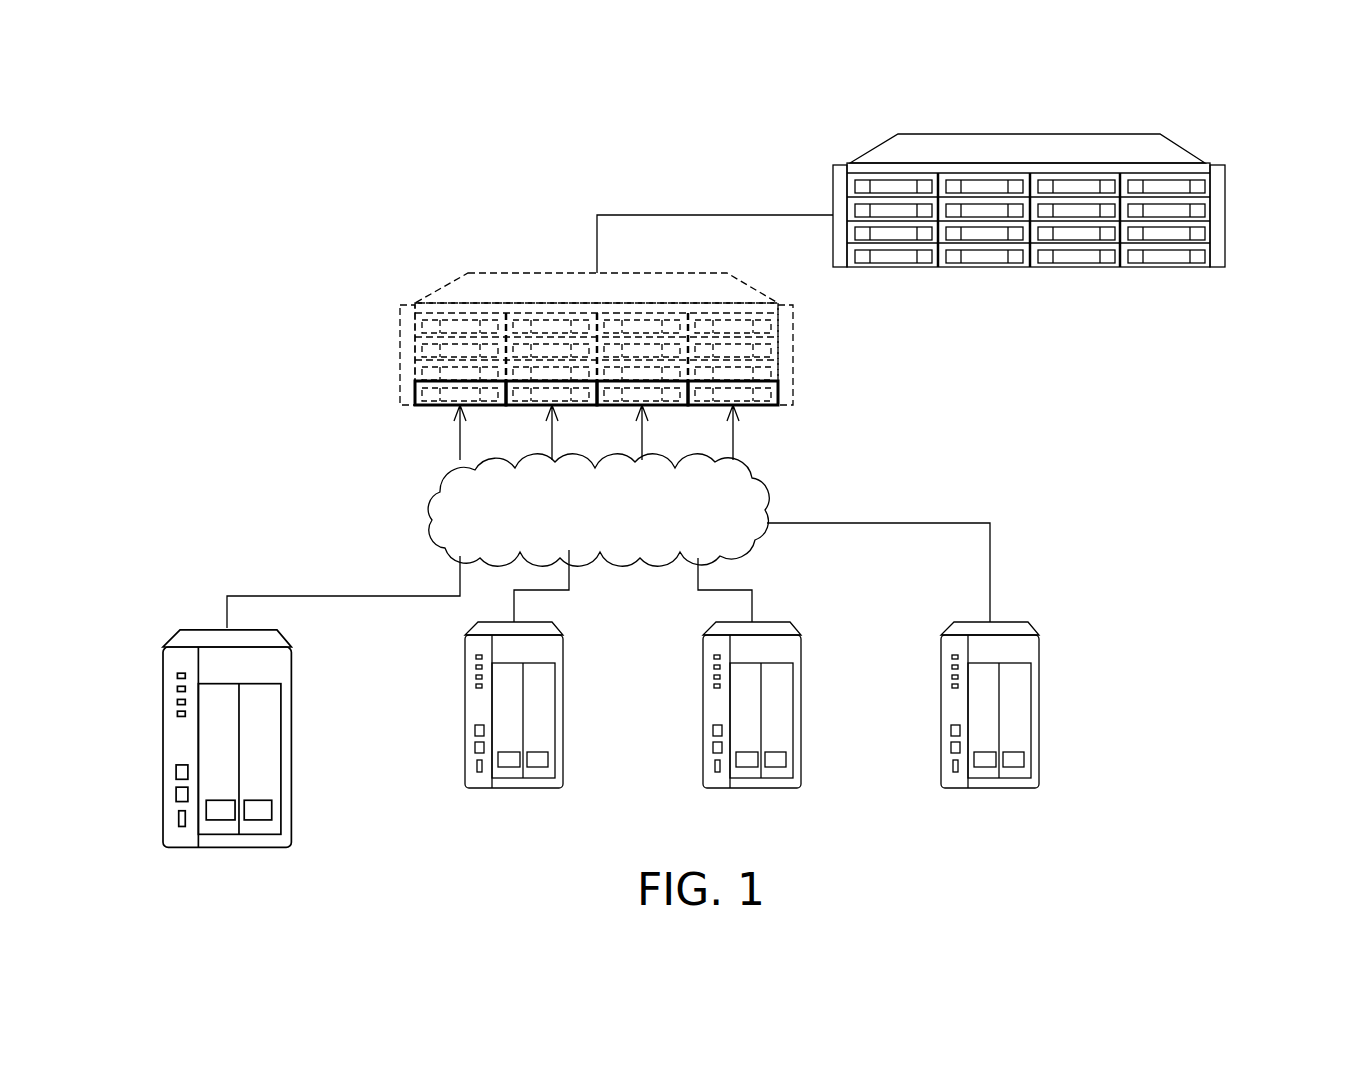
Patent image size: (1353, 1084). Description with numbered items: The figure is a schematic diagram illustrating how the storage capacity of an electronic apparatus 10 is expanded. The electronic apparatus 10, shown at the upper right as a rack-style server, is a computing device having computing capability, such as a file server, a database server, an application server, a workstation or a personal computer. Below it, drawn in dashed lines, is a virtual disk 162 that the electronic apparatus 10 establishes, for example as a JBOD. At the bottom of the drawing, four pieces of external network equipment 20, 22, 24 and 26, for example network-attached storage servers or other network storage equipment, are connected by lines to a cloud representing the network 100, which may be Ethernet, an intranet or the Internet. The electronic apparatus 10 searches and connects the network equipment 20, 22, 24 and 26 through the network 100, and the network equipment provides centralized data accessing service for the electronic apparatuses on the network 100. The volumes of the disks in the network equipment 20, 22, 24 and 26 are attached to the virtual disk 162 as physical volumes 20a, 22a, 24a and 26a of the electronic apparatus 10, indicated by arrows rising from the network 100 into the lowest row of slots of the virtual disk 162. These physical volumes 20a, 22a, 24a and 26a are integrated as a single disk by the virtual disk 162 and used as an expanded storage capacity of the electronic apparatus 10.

The electronic apparatus 10 is at (1227, 213).
The virtual disk 162 is at (793, 355).
The physical volume 20a is at (475, 409).
The physical volume 22a is at (566, 409).
The physical volume 24a is at (657, 409).
The physical volume 26a is at (750, 409).
The network 100 is at (757, 497).
The network equipment 20 is at (292, 745).
The network equipment 22 is at (563, 712).
The network equipment 24 is at (801, 712).
The network equipment 26 is at (1039, 712).